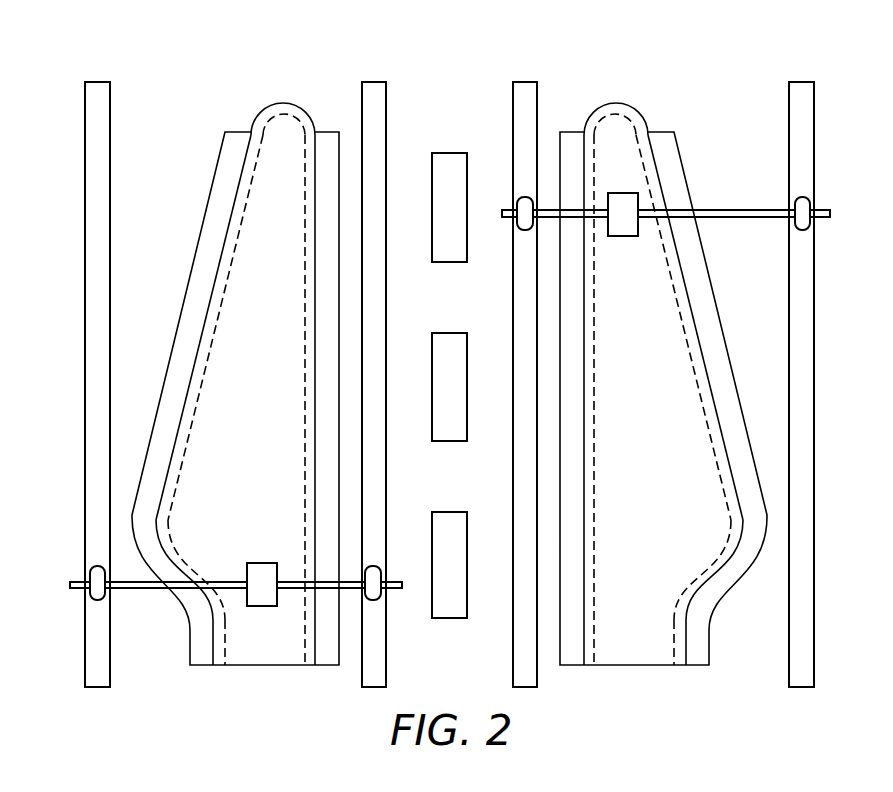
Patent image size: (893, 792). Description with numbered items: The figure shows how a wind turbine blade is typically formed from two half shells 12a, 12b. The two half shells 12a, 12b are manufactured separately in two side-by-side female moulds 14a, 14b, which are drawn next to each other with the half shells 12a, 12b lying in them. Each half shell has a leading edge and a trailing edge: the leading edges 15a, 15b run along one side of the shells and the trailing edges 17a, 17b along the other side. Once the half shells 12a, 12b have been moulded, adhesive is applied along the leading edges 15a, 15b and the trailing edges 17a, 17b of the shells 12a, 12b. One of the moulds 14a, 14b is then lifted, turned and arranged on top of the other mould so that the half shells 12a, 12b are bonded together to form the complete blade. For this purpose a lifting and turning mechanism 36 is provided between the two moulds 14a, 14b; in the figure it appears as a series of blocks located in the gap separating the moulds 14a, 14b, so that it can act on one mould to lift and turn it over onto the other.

The half shell 12a is at (235, 363).
The half shell 12b is at (664, 363).
The female mould 14a is at (280, 131).
The female mould 14b is at (616, 131).
The leading edge 15a is at (316, 285).
The leading edge 15b is at (583, 286).
The trailing edge 17a is at (157, 518).
The trailing edge 17b is at (743, 518).
The lifting and turning mechanism 36 is at (448, 153).